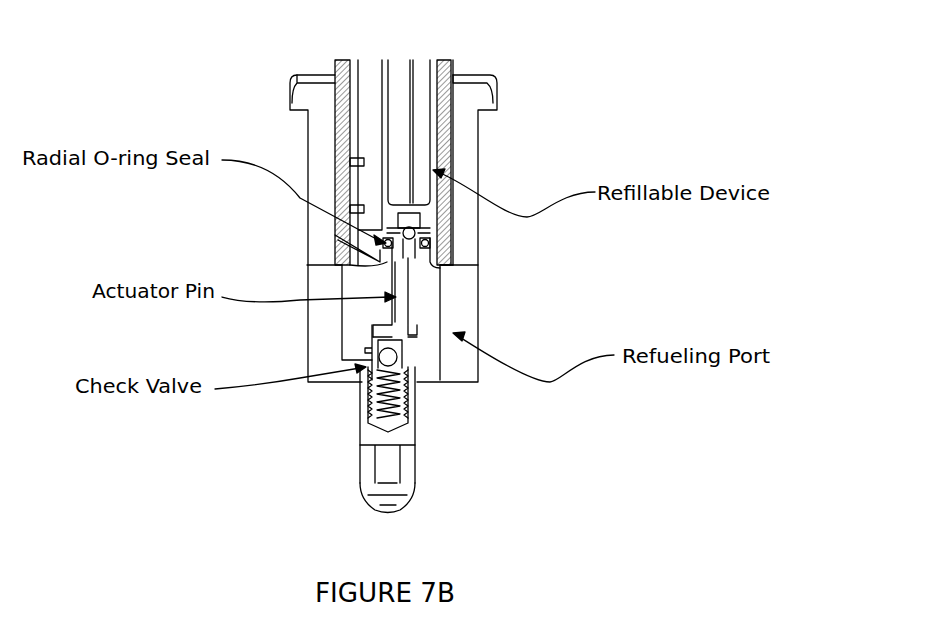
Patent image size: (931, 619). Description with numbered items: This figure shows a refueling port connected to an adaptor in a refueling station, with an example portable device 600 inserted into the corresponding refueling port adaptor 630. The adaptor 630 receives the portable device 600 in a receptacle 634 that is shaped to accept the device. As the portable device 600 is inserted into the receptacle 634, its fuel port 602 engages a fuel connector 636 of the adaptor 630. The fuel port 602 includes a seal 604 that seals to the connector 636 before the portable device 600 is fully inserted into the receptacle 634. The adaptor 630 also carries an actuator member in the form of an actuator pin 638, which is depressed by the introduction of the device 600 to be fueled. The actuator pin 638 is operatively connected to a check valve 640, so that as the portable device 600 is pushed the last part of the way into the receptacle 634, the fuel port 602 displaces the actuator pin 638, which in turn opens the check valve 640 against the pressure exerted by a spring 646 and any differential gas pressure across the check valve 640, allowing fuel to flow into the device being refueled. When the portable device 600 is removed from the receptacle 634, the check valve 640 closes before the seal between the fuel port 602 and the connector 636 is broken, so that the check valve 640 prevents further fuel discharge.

The portable device 600 is at (417, 78).
The fuel port 602 is at (412, 232).
The seal 604 is at (428, 245).
The refueling port adaptor 630 is at (317, 132).
The receptacle 634 is at (338, 113).
The fuel connector 636 is at (380, 279).
The actuator pin 638 is at (398, 285).
The check valve 640 is at (393, 358).
The spring 646 is at (390, 395).